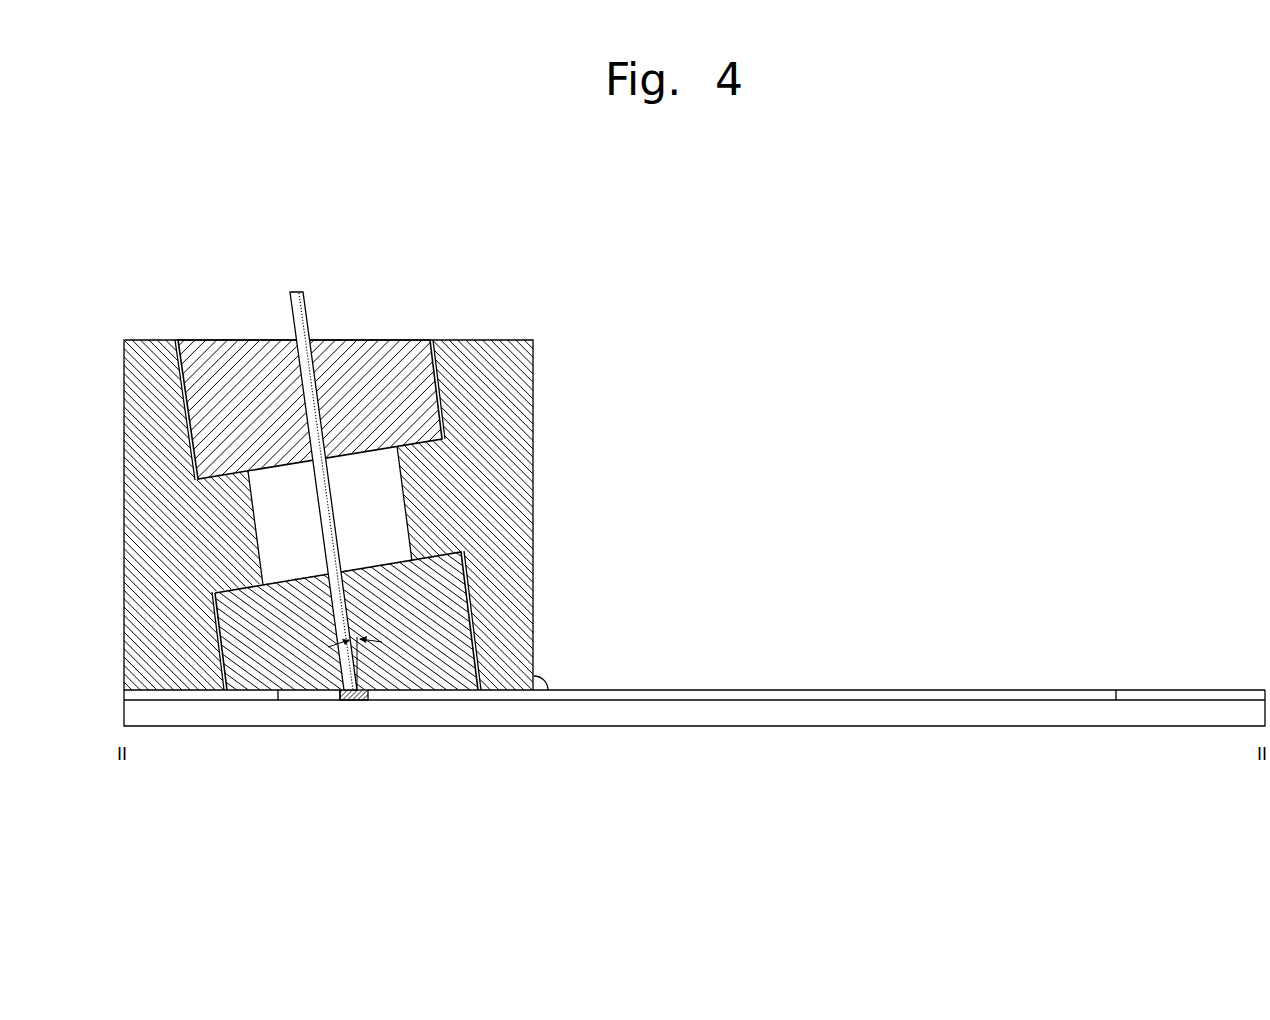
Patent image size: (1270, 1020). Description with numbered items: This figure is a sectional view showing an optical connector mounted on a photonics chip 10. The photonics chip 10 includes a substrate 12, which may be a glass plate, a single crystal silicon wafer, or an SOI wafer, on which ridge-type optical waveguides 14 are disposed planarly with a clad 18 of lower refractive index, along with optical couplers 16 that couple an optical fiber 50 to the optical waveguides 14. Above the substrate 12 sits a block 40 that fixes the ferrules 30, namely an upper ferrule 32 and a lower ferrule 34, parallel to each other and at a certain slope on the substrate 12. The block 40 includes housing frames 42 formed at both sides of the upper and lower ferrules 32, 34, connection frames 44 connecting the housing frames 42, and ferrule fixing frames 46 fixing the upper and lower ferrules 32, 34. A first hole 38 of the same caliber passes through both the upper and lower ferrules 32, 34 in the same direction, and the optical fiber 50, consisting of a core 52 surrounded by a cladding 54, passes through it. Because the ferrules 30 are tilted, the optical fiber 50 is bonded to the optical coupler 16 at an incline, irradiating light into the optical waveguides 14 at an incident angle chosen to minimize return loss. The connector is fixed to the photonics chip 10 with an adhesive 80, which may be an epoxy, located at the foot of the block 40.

The photonics chip 10 is at (694, 699).
The substrate 12 is at (980, 710).
The optical waveguides 14 is at (867, 692).
The optical couplers 16 is at (357, 702).
The clad 18 is at (214, 698).
The ferrules 30 is at (339, 515).
The upper ferrule 32 is at (207, 405).
The lower ferrule 34 is at (346, 621).
The first hole 38 is at (304, 389).
The block 40 is at (441, 466).
The housing frames 42 is at (487, 350).
The connection frames 44 is at (362, 470).
The ferrule fixing frames 46 is at (417, 457).
The optical fibers 50 is at (312, 447).
The core 52 is at (295, 291).
The cladding 54 is at (326, 463).
The adhesive 80 is at (535, 674).